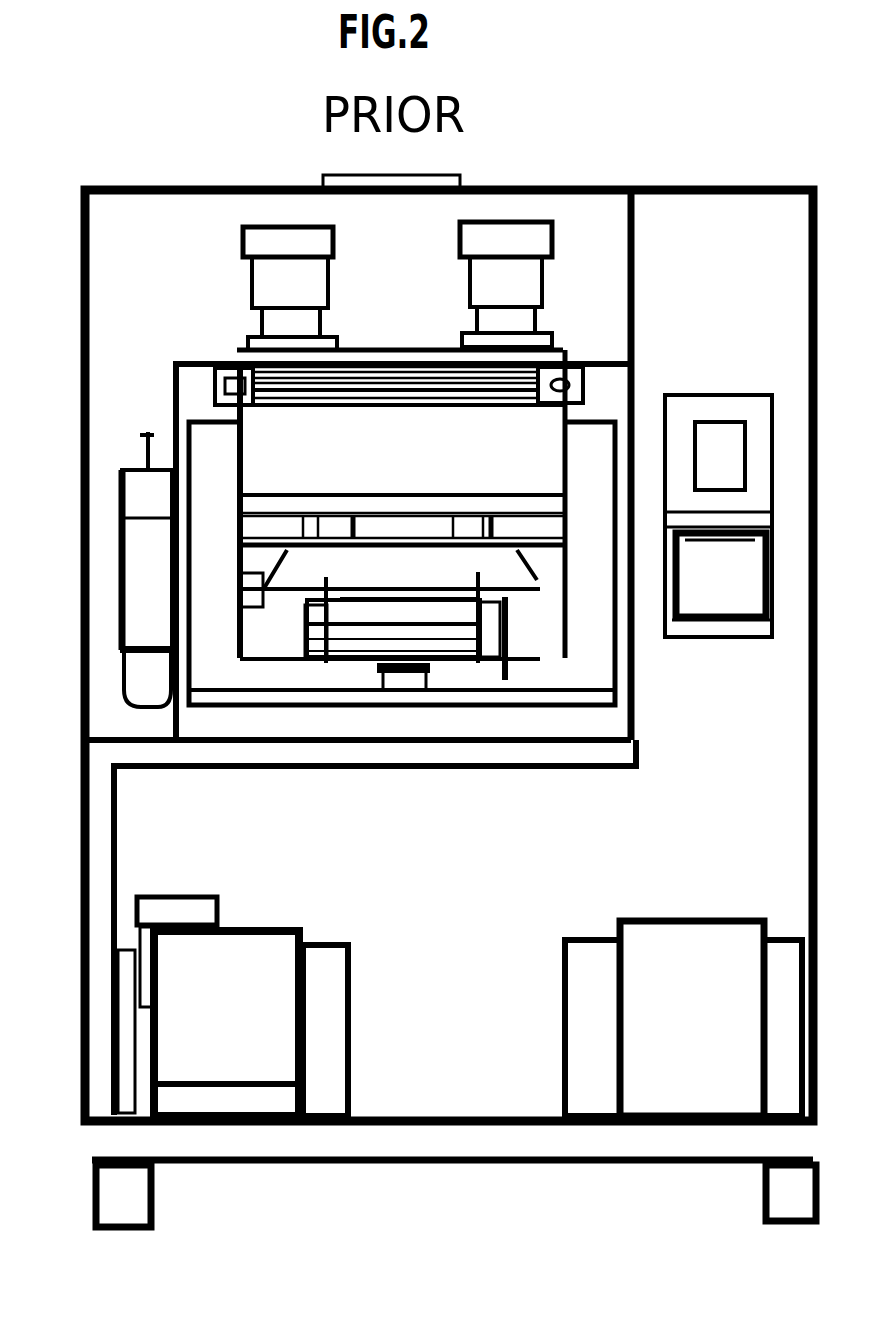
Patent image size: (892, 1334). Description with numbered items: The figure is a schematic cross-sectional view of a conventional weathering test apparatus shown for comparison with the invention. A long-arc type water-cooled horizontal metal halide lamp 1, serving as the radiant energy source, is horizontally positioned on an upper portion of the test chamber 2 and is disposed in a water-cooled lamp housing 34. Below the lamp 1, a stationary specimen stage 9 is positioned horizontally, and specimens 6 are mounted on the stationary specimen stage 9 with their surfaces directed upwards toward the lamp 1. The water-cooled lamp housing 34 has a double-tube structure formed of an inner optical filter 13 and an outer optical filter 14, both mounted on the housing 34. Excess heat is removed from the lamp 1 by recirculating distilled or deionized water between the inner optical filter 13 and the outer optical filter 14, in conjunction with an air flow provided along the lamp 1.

The long-arc type water-cooled horizontal metal halide lamp 1 is at (363, 383).
The test chamber 2 is at (507, 580).
The specimens 6 is at (418, 530).
The stationary specimen stage 9 is at (285, 540).
The inner optical filter 13 is at (398, 398).
The outer optical filter 14 is at (490, 397).
The water-cooled lamp housing 34 is at (253, 383).